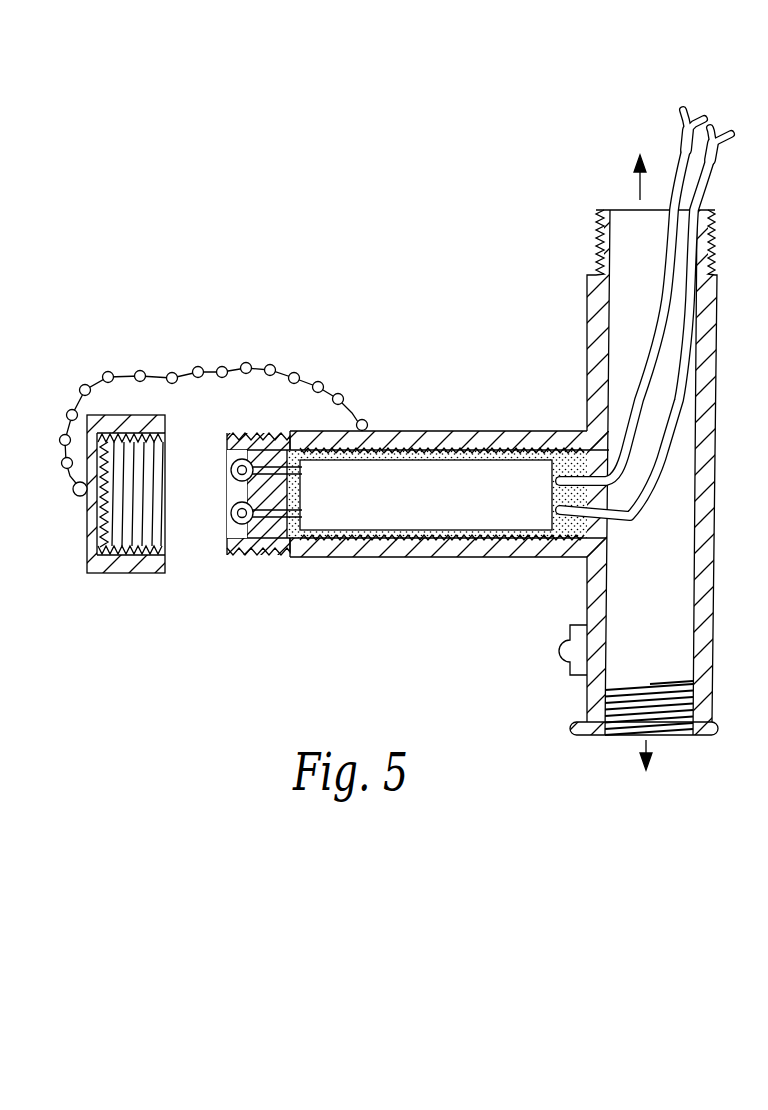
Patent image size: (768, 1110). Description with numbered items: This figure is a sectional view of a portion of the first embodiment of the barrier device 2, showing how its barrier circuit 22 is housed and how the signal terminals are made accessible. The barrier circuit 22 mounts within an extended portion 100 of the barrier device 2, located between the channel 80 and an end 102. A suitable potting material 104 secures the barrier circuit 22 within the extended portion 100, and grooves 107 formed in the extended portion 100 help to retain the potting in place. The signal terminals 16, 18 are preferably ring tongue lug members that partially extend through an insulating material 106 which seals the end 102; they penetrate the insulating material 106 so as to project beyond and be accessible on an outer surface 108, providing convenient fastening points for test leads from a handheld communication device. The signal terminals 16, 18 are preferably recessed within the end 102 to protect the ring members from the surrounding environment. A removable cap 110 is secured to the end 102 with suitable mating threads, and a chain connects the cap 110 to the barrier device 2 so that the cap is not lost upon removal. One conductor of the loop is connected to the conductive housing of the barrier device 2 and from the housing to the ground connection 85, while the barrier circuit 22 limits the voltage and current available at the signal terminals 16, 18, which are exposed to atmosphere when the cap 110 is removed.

The barrier device 2 is at (486, 558).
The signal terminal 16 is at (232, 462).
The signal terminal 18 is at (232, 510).
The barrier circuit 22 is at (438, 510).
The channel 80 is at (693, 648).
The ground connection 85 is at (570, 668).
The extended portion 100 is at (383, 430).
The end 102 is at (245, 432).
The potting material 104 is at (417, 456).
The insulating material 106 is at (246, 542).
The grooves 107 is at (408, 543).
The outer surface 108 is at (232, 527).
The removable cap 110 is at (115, 415).